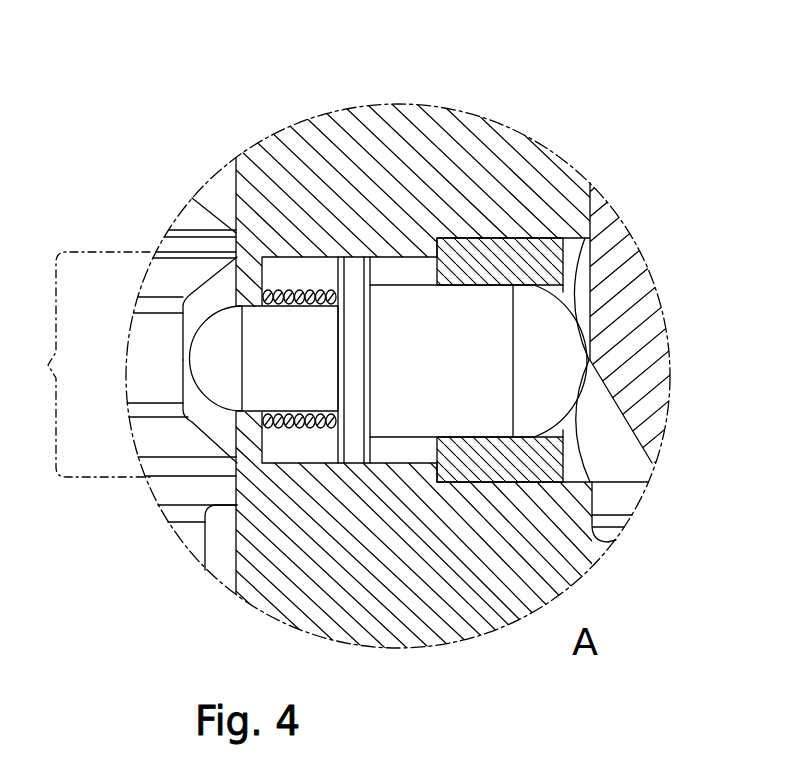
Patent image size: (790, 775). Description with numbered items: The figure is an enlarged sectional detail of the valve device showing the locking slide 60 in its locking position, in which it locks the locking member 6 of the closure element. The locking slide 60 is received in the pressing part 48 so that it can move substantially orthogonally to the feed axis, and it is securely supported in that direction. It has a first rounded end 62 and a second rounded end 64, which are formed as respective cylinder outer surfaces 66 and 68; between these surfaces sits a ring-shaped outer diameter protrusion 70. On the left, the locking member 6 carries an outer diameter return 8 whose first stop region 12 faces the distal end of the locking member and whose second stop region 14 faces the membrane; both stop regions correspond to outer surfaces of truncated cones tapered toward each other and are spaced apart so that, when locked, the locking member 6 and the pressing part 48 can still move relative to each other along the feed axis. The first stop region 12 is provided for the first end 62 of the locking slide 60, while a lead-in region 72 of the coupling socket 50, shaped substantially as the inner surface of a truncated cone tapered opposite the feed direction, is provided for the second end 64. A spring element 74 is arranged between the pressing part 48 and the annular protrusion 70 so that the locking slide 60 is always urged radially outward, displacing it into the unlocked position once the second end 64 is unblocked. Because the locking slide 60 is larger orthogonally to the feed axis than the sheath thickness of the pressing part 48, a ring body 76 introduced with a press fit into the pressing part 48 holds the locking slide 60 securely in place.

The locking member 6 is at (173, 487).
The outer diameter return 8 is at (88, 364).
The first stop region 12 is at (208, 295).
The second stop region 14 is at (209, 421).
The pressing part 48 is at (400, 130).
The coupling socket 50 is at (617, 272).
The locking slide 60 is at (203, 244).
The first rounded end 62 is at (205, 362).
The second rounded end 64 is at (557, 336).
The cylinder outer surface 66 is at (314, 373).
The cylinder outer surface 68 is at (444, 373).
The ring-shaped outer diameter protrusion 70 is at (347, 465).
The lead-in region 72 is at (631, 418).
The spring element 74 is at (300, 432).
The ring body 76 is at (505, 253).